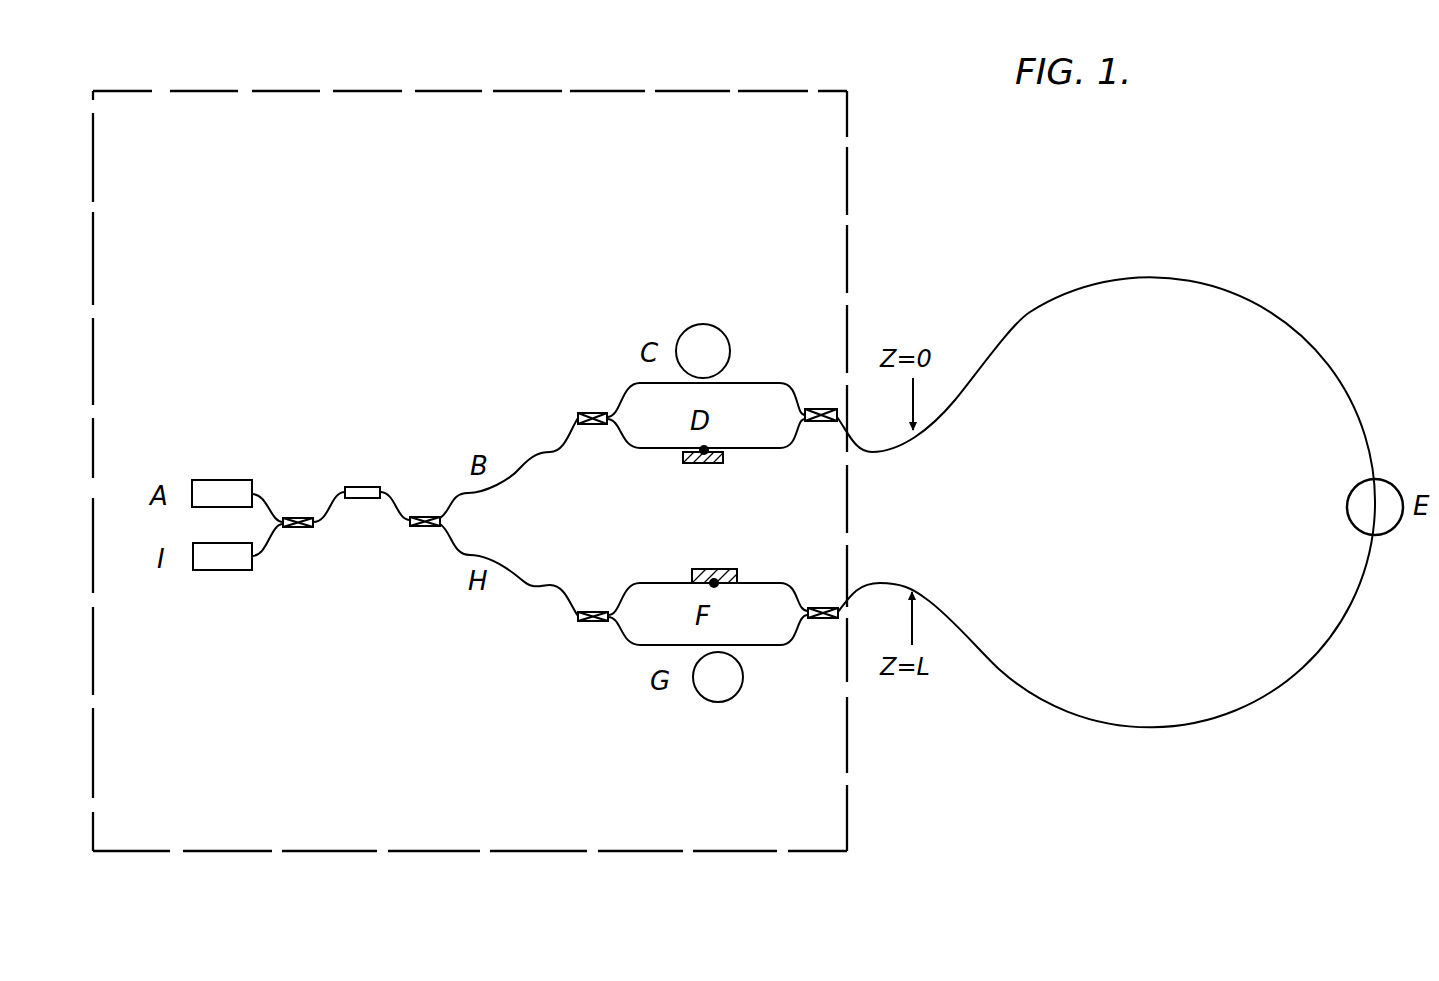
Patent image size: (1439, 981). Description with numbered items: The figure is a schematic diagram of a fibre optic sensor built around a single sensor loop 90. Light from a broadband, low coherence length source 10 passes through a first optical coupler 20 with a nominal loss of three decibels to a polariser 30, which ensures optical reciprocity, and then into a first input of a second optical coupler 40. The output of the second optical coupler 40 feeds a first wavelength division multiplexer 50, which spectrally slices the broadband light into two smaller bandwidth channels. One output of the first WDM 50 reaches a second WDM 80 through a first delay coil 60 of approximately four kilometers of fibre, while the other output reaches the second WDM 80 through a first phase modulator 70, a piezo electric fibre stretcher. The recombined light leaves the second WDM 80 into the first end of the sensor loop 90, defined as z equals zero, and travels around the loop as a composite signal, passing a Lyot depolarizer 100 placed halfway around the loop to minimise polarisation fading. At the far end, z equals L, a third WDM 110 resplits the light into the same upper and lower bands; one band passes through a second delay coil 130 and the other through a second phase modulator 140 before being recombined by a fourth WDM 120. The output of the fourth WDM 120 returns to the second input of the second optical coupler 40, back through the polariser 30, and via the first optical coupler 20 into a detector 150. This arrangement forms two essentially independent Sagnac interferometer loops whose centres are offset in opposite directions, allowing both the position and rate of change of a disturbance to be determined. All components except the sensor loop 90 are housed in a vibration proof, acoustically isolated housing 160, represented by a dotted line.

The source 10 is at (232, 480).
The first optical coupler 20 is at (298, 517).
The polariser 30 is at (360, 487).
The second optical coupler 40 is at (430, 528).
The first wavelength division multiplexer 50 is at (598, 412).
The first delay coil 60 is at (700, 324).
The first phase modulator 70 is at (700, 464).
The second wavelength division multiplexer 80 is at (818, 408).
The sensor loop 90 is at (1058, 295).
The Lyot depolarizer 100 is at (1347, 507).
The third wavelength division multiplexer 110 is at (820, 605).
The fourth wavelength division multiplexer 120 is at (592, 607).
The second delay coil 130 is at (715, 702).
The second phase modulator 140 is at (707, 568).
The detector 150 is at (232, 570).
The housing 160 is at (437, 82).